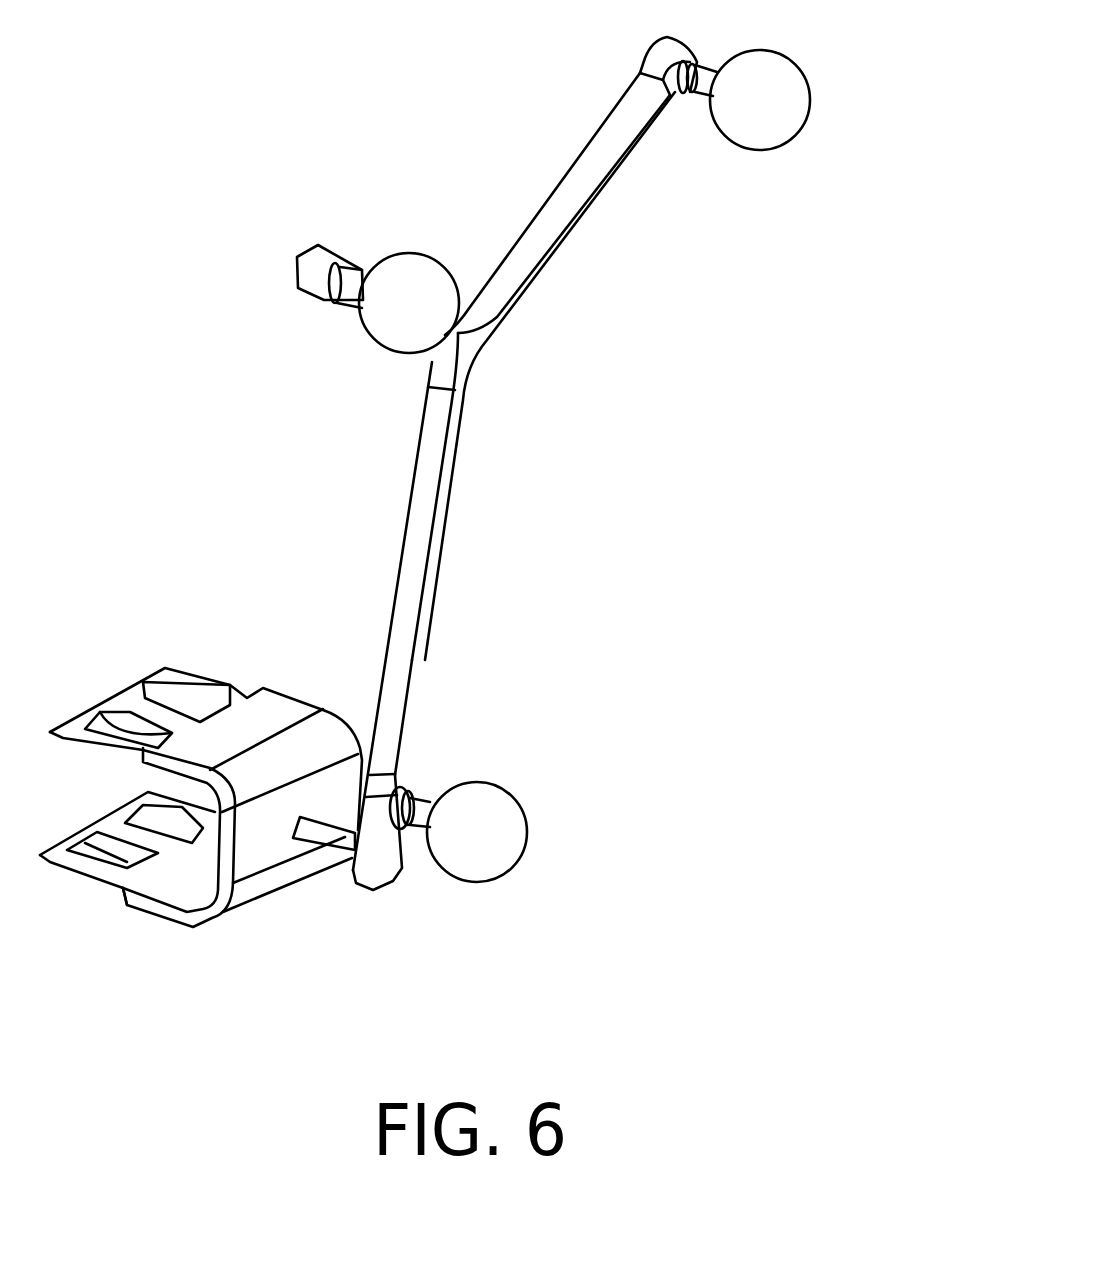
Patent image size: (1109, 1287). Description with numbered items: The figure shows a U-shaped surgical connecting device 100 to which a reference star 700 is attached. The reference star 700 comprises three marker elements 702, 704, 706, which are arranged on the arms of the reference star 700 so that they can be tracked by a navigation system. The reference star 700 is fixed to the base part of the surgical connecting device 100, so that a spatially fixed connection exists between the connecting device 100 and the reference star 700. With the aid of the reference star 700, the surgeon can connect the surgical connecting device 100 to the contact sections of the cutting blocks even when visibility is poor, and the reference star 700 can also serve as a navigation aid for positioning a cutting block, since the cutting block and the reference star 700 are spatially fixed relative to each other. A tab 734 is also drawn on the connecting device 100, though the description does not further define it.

The surgical connecting device 100 is at (207, 625).
The reference star 700 is at (485, 507).
The marker element 702 is at (497, 833).
The marker element 704 is at (412, 302).
The marker element 706 is at (778, 109).
The tab 734 is at (266, 850).